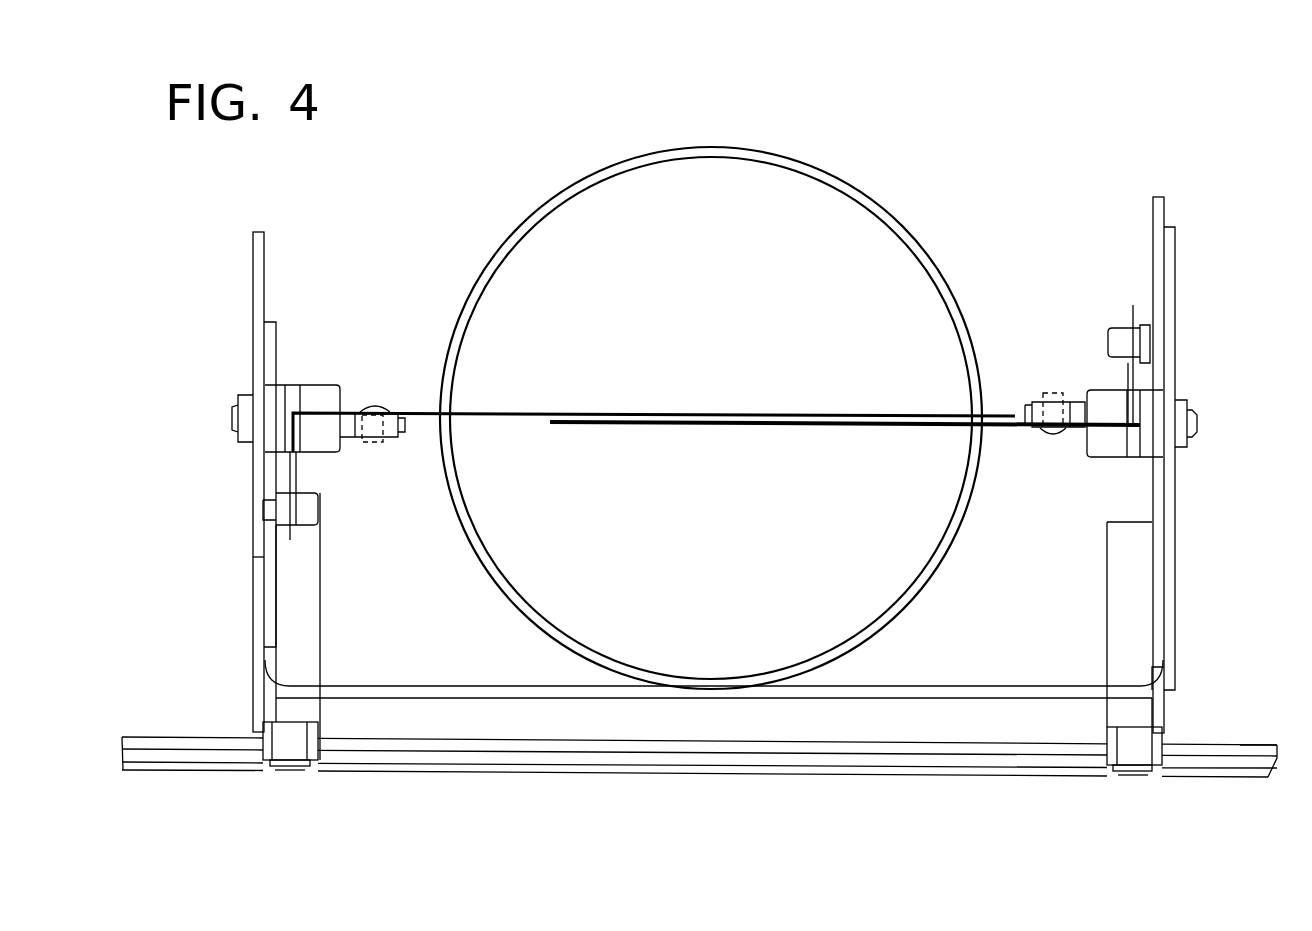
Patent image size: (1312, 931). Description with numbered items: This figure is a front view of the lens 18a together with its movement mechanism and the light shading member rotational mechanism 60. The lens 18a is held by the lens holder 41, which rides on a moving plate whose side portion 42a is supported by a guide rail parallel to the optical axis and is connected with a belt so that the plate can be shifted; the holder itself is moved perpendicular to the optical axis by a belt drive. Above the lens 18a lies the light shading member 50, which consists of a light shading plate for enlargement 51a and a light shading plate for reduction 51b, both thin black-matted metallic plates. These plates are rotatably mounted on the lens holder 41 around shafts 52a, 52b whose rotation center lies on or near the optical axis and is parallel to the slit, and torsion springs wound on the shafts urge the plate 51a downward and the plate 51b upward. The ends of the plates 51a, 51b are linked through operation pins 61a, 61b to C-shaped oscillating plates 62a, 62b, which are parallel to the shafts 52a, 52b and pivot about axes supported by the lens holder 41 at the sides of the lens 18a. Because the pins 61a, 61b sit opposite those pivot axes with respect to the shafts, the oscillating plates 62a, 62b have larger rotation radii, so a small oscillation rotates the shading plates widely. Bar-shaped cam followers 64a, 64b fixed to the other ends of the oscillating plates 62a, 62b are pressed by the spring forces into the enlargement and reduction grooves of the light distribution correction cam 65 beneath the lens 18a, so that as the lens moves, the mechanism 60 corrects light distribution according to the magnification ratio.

The lens 18a is at (843, 183).
The lens holder 41 is at (253, 292).
The side portion of moving plate 42a is at (1197, 778).
The light shading member 50 is at (366, 370).
The light shading plate for enlargement 51a is at (785, 428).
The light shading plate for reduction 51b is at (420, 433).
The shaft 52a is at (1197, 428).
The shaft 52b is at (235, 418).
The light shading member rotational mechanism 60 is at (702, 480).
The operation pin 61a is at (1108, 340).
The operation pin 61b is at (265, 505).
The oscillating plate 62a is at (1153, 228).
The oscillating plate 62b is at (277, 348).
The cam follower 64a is at (1110, 763).
The cam follower 64b is at (318, 762).
The light distribution correction cam 65 is at (775, 760).